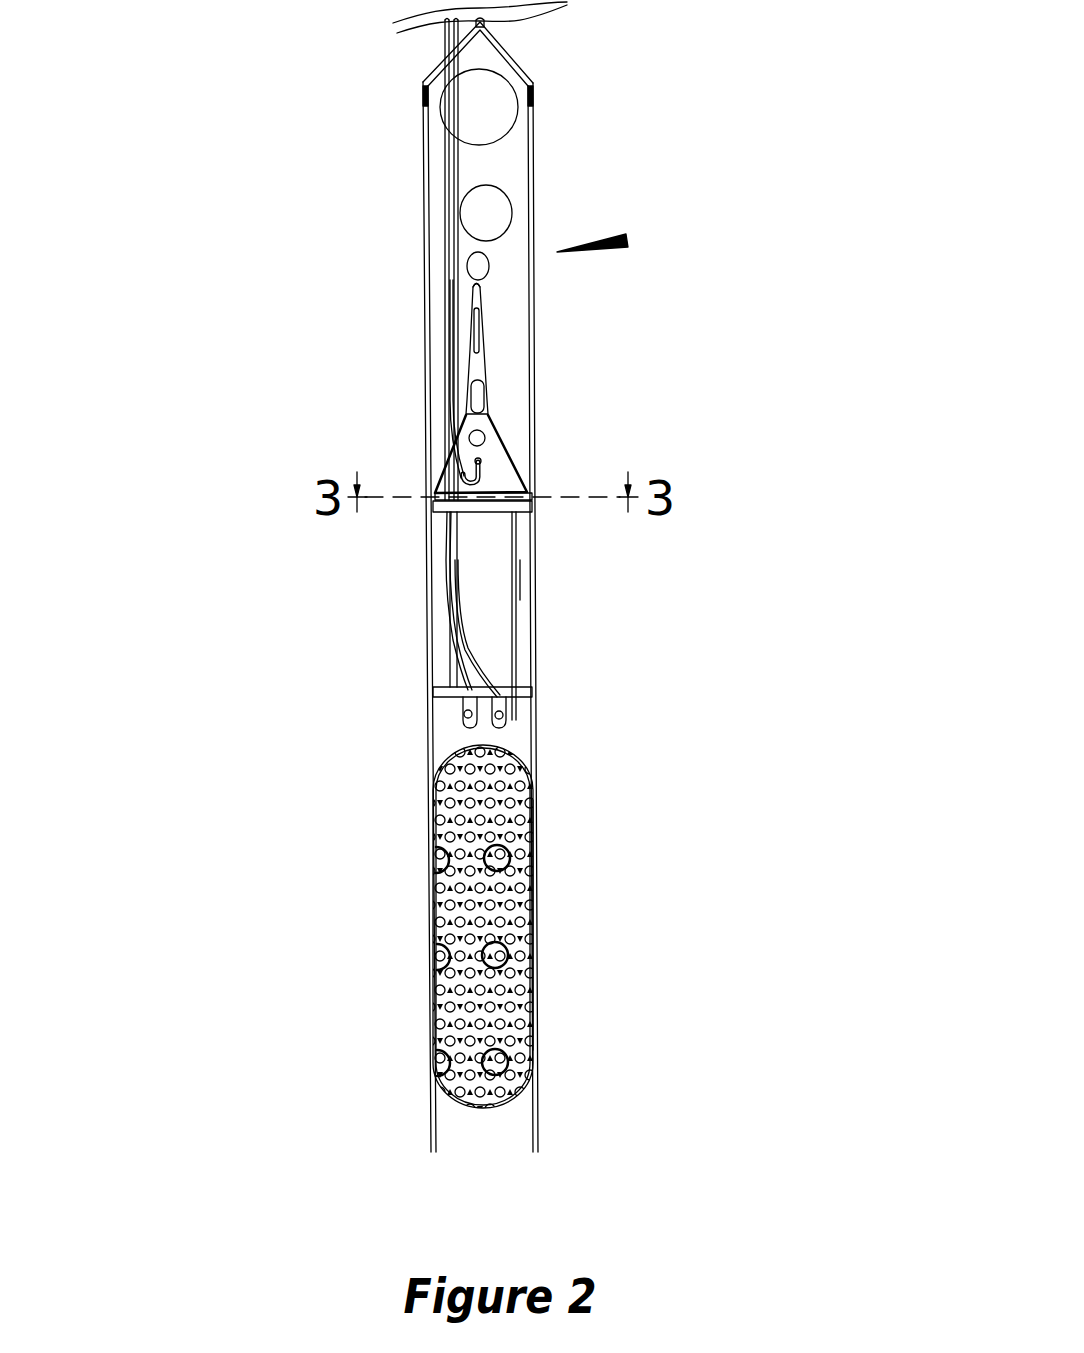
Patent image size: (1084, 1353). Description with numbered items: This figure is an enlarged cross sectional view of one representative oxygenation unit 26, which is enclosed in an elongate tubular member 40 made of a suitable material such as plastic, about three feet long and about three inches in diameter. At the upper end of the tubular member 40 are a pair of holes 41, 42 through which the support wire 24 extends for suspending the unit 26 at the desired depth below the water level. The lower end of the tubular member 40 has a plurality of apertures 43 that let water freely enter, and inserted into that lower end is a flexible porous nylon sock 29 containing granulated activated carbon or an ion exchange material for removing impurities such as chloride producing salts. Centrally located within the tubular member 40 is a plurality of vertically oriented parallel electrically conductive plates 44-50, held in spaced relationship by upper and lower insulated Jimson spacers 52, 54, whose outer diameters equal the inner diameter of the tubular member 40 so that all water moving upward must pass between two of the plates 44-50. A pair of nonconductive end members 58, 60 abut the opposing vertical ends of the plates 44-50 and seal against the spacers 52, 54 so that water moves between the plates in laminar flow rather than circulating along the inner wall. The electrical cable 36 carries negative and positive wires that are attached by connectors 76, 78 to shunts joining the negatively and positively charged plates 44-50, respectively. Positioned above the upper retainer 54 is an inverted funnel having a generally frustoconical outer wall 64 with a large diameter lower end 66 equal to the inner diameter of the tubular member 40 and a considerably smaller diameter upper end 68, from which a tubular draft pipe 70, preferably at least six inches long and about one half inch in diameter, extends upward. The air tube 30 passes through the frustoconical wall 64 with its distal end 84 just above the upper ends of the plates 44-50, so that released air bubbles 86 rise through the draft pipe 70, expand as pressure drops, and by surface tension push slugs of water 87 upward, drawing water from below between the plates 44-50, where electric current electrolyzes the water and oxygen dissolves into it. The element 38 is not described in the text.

The support wire 24 is at (465, 50).
The oxygenation unit 26 is at (627, 240).
The flexible porous nylon sock 29 is at (532, 822).
The air tube 30 is at (442, 70).
The electrical cable 36 is at (463, 663).
The lower plate 38 is at (483, 672).
The elongate tubular member 40 is at (398, 917).
The hole 41 is at (420, 105).
The hole 42 is at (542, 110).
The apertures 43 is at (500, 1053).
The electrically conductive plates 44-50 is at (522, 588).
The lower insulated Jimson spacer 52 is at (465, 690).
The upper insulated Jimson spacer 54 is at (463, 507).
The nonconductive end member 58 is at (442, 578).
The nonconductive end member 60 is at (517, 617).
The frustoconical outer wall 64 is at (460, 430).
The large diameter lower end 66 is at (528, 494).
The smaller diameter upper end 68 is at (492, 417).
The tubular draft pipe 70 is at (488, 372).
The connector 76 is at (458, 717).
The connector 78 is at (507, 722).
The distal end 84 is at (490, 465).
The air bubbles 86 is at (470, 393).
The slug of water 87 is at (477, 367).